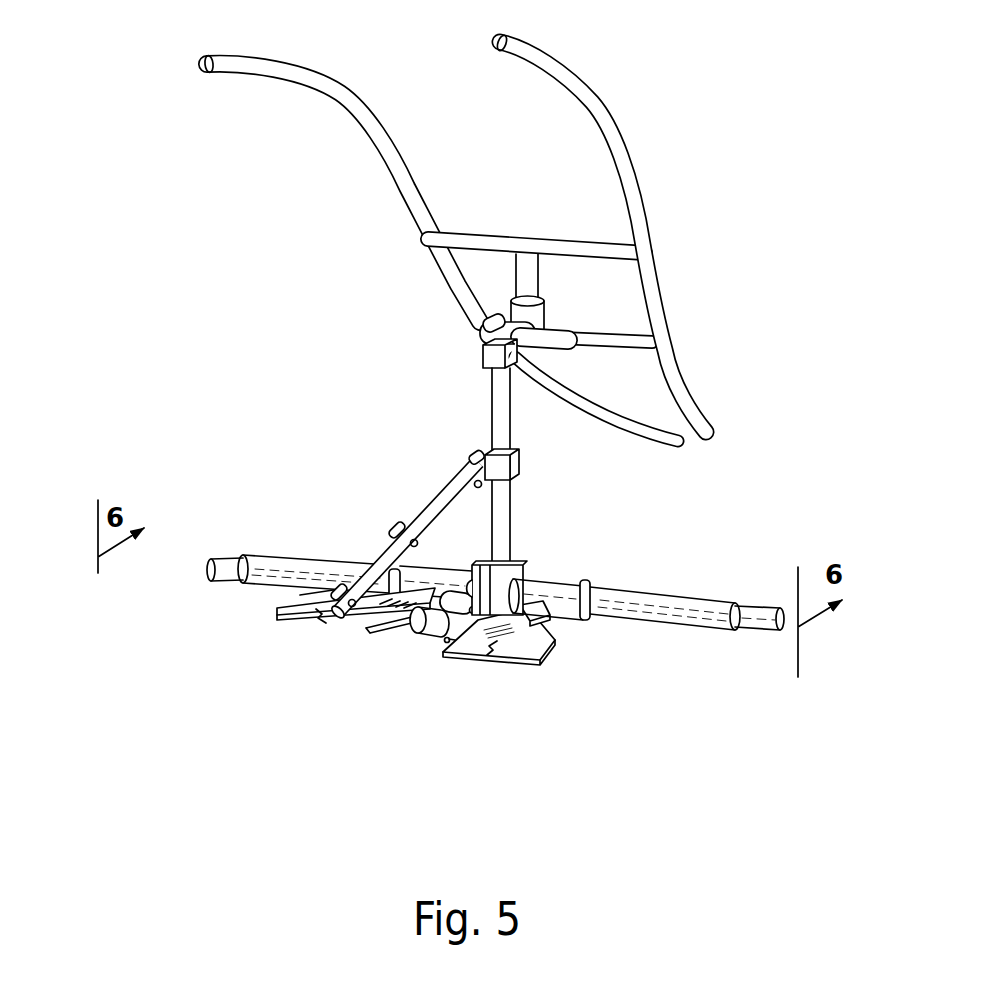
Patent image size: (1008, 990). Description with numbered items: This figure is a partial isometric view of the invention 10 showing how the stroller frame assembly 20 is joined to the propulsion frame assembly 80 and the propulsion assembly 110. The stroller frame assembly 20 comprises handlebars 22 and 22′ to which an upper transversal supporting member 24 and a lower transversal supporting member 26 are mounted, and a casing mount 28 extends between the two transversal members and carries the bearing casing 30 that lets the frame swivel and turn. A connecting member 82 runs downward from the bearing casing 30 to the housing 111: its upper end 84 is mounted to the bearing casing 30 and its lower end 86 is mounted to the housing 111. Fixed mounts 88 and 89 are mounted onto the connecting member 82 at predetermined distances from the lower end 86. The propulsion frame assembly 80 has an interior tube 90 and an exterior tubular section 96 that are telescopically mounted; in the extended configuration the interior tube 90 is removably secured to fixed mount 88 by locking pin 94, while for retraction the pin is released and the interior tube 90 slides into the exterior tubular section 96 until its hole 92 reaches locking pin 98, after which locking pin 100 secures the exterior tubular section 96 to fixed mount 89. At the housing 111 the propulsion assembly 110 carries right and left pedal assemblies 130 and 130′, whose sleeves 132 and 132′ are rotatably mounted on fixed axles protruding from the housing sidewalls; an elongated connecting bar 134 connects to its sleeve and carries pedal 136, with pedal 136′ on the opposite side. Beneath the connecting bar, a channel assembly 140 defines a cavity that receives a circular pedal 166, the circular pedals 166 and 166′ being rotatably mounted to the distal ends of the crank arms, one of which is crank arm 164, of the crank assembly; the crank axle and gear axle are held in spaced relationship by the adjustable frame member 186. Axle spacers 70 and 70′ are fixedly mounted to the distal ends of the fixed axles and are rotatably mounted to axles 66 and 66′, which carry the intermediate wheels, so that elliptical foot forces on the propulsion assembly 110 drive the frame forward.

The present invention 10 is at (727, 84).
The stroller frame assembly 20 is at (372, 160).
The handlebar 22 is at (587, 90).
The handlebar 22′ is at (360, 100).
The upper transversal supporting member 24 is at (620, 333).
The lower transversal supporting member 26 is at (495, 240).
The casing mount 28 is at (543, 278).
The bearing casing 30 is at (543, 317).
The axle 66 is at (763, 612).
The axle 66′ is at (224, 557).
The axle spacer 70 is at (640, 590).
The axle spacer 70′ is at (283, 568).
The propulsion frame assembly 80 is at (425, 507).
The connecting member 82 is at (500, 380).
The upper end 84 is at (485, 325).
The lower end 86 is at (513, 570).
The fixed mount 88 is at (530, 444).
The fixed mount 89 is at (520, 357).
The interior tube 90 is at (455, 490).
The hole 92 is at (518, 470).
The locking pin 94 is at (483, 462).
The exterior tubular section 96 is at (388, 562).
The locking pin 98 is at (394, 528).
The locking pin 100 is at (365, 595).
The propulsion assembly 110 is at (562, 565).
The housing 111 is at (537, 565).
The right pedal assembly 130 is at (560, 654).
The left pedal assembly 130′ is at (293, 621).
The sleeve 132 is at (583, 583).
The sleeve 132′ is at (440, 576).
The elongated connecting bar 134 is at (530, 608).
The pedal 136 is at (548, 660).
The pedal 136′ is at (275, 613).
The channel assembly 140 is at (391, 634).
The crank arm 164 is at (390, 641).
The circular pedal 166 is at (463, 615).
The circular pedal 166′ is at (383, 624).
The adjustable frame member 186 is at (462, 620).